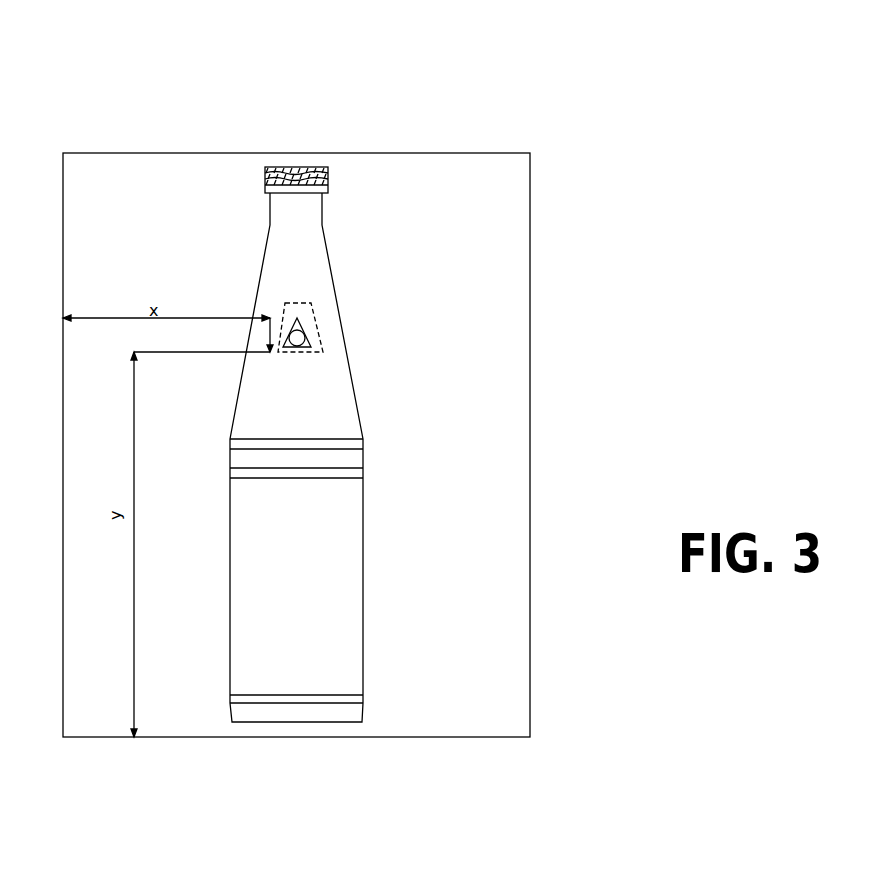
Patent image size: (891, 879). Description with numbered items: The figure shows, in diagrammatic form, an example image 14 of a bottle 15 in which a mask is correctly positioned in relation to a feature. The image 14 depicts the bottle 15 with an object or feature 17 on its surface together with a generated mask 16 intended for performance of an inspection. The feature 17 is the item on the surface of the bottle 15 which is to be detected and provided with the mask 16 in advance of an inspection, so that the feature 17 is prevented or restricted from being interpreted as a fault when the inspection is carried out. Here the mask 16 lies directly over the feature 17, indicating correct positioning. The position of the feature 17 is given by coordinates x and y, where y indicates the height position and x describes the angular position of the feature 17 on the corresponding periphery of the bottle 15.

The image 14 is at (90, 152).
The bottle 15 is at (305, 185).
The mask 16 is at (305, 303).
The feature 17 is at (313, 327).